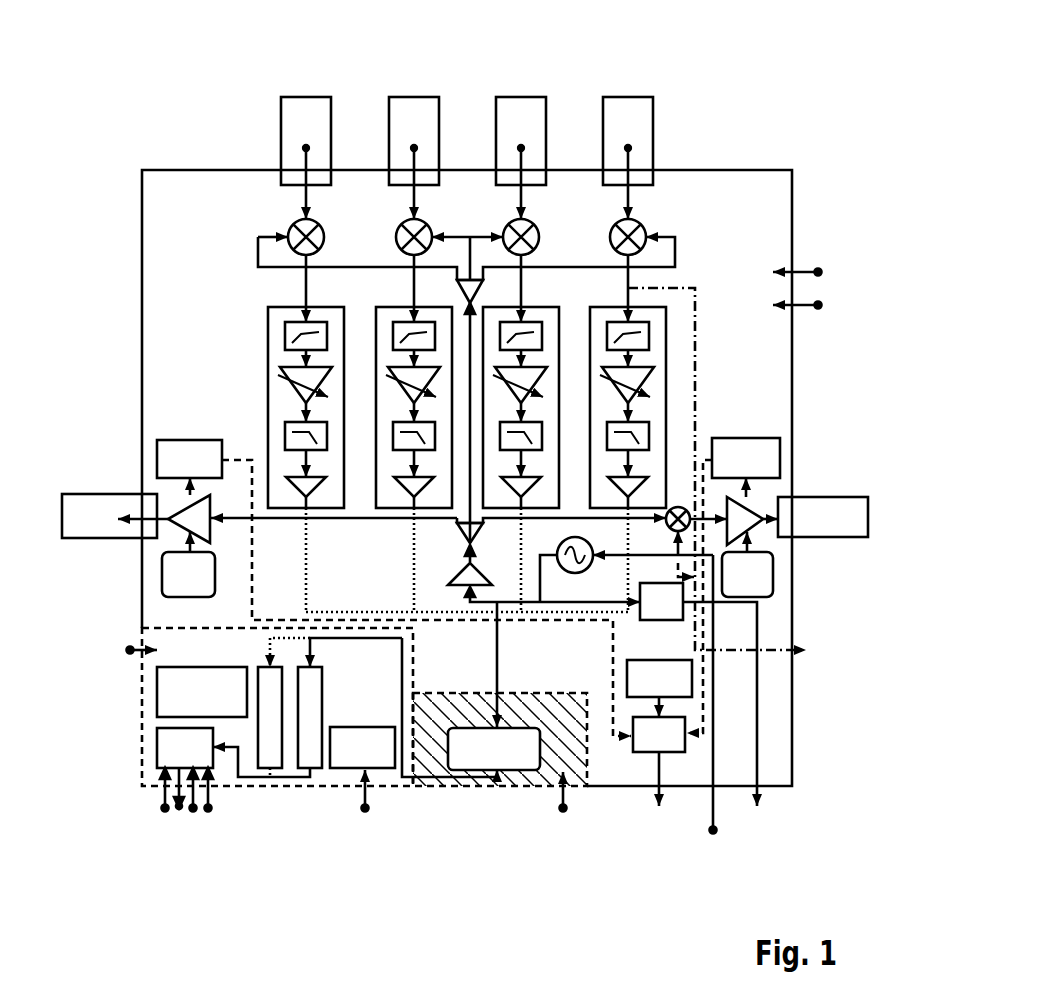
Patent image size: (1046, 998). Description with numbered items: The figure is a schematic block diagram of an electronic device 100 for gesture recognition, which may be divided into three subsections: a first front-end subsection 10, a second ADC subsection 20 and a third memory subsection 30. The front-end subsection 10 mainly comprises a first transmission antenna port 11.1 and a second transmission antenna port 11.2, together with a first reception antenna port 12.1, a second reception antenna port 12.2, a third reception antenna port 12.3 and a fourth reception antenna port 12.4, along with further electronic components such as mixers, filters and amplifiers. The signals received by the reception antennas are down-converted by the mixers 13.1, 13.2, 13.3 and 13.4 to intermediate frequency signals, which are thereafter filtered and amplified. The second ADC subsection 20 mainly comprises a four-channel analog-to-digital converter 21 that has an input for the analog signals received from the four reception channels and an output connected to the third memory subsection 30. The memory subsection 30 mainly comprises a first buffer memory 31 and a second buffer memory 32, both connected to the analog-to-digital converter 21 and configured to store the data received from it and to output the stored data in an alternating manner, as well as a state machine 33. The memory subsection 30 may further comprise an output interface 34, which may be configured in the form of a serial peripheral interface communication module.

The electronic device 100 is at (158, 40).
The first front-end subsection 10 is at (162, 245).
The first reception antenna port 12.1 is at (426, 107).
The second reception antenna port 12.2 is at (522, 107).
The third reception antenna port 12.3 is at (303, 105).
The fourth reception antenna port 12.4 is at (632, 105).
The mixer 13.1 is at (401, 224).
The mixer 13.2 is at (535, 228).
The mixer 13.3 is at (295, 224).
The mixer 13.4 is at (642, 229).
The first transmission antenna port 11.1 is at (88, 493).
The second transmission antenna port 11.2 is at (838, 497).
The third memory subsection 30 is at (150, 790).
The first buffer memory 31 is at (268, 770).
The second buffer memory 32 is at (318, 770).
The state machine 33 is at (157, 690).
The output interface 34 is at (157, 742).
The second ADC subsection 20 is at (437, 772).
The analog-to-digital converter 21 is at (515, 772).